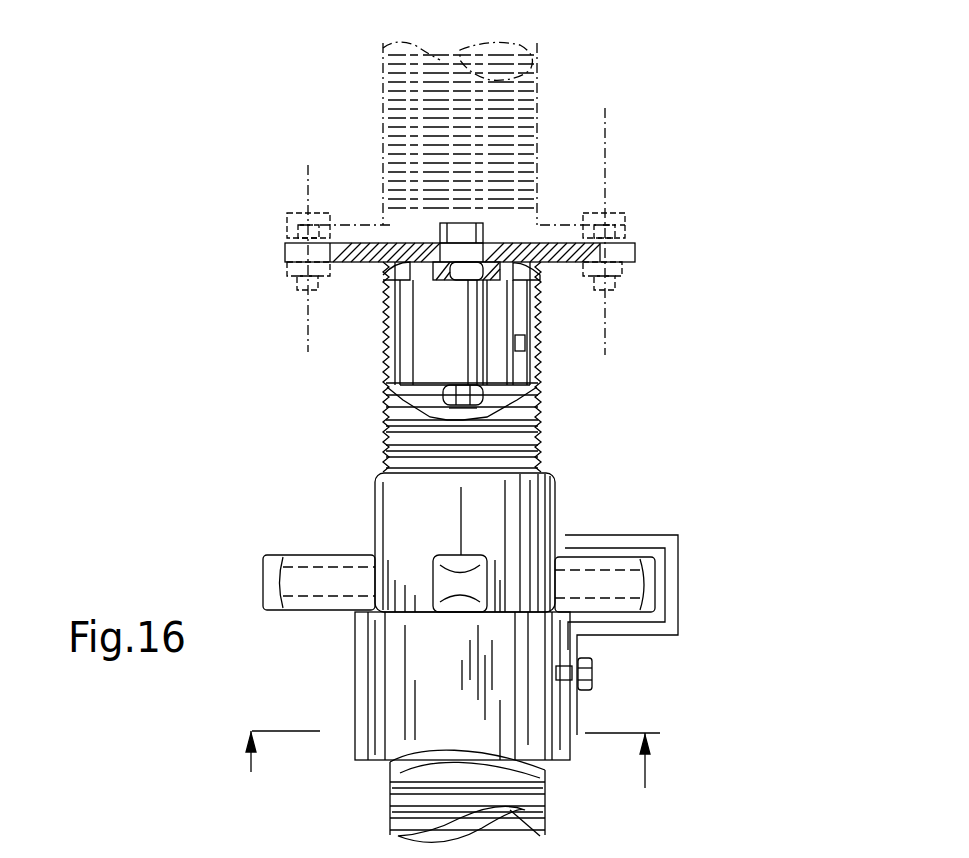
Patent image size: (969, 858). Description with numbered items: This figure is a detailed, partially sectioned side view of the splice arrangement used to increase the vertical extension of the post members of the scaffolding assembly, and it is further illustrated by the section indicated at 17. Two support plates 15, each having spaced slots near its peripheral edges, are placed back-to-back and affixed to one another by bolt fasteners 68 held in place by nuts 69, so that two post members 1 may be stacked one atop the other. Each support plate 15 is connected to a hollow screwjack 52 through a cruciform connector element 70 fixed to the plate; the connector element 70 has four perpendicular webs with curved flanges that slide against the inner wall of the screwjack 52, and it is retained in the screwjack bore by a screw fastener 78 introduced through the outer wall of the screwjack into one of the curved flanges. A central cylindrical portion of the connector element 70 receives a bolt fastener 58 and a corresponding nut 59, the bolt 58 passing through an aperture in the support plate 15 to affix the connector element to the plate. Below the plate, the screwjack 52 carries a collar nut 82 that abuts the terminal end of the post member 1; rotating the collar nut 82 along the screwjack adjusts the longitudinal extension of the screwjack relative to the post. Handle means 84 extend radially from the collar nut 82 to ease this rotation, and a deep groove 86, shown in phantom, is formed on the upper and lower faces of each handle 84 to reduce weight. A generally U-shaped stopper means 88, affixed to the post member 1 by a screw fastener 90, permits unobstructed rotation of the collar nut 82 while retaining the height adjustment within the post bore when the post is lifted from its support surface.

The post member 1 is at (430, 692).
The support plate 15 is at (552, 225).
The section line 17- 17 is at (449, 774).
The screwjack 52 is at (527, 127).
The bolt fastener 58 is at (457, 223).
The nut 59 is at (450, 387).
The bolt fasteners 68 is at (287, 210).
The nuts 69 is at (280, 268).
The cruciform connector element 70 is at (533, 373).
The screw fastener 78 is at (450, 338).
The collar nut 82 is at (393, 520).
The handle means 84 is at (263, 575).
The deep groove 86 is at (300, 560).
The stopper means 88 is at (680, 582).
The screw fastener 90 is at (593, 673).